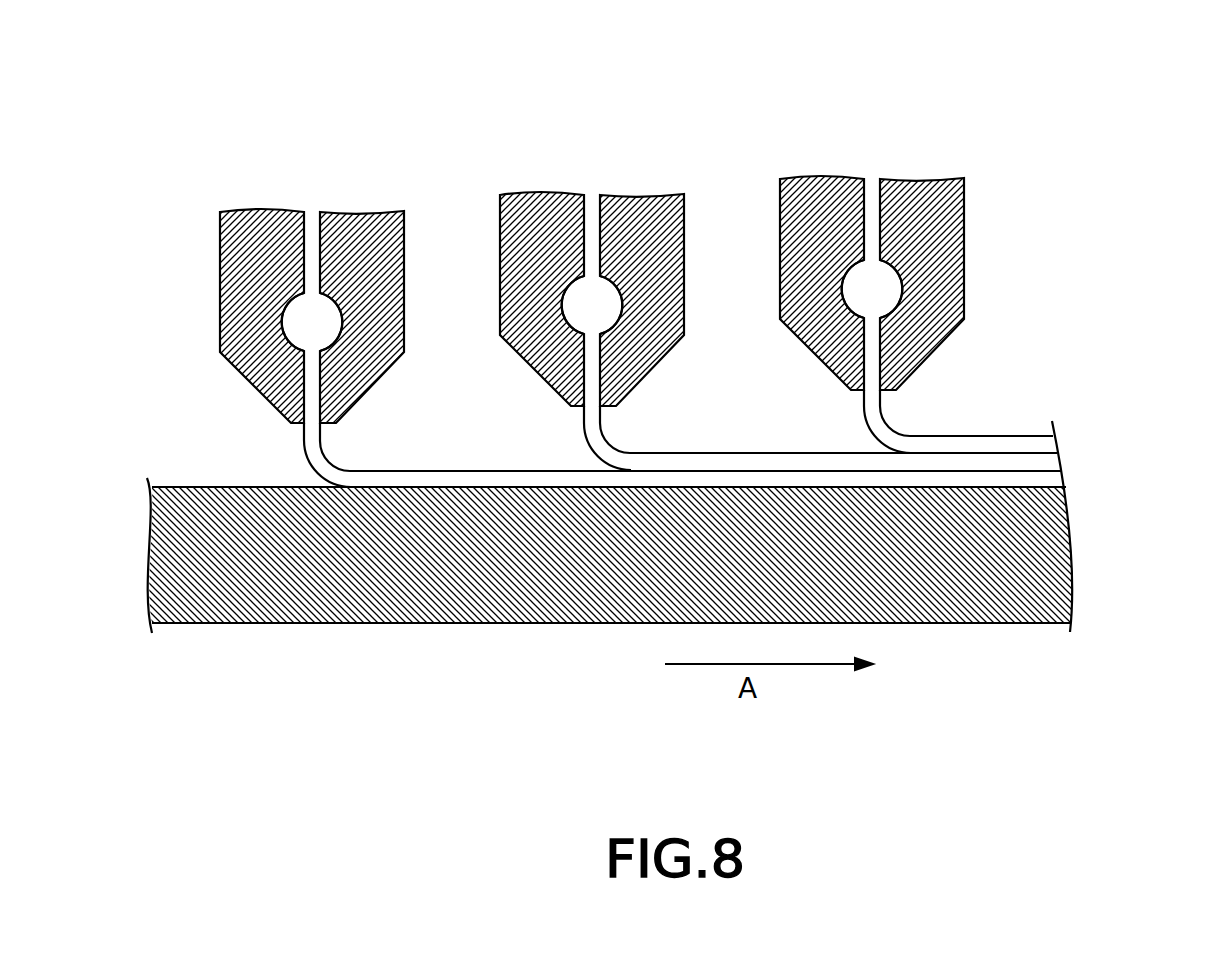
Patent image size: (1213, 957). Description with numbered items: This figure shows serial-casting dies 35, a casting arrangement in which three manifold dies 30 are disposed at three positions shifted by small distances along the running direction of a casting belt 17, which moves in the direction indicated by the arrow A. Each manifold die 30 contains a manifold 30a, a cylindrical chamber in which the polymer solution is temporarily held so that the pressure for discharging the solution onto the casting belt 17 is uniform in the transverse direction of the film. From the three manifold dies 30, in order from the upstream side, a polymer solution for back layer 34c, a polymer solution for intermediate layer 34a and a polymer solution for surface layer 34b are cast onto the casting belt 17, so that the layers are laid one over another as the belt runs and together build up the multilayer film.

The serial-casting dies 35 is at (360, 88).
The manifold die 30 is at (357, 232).
The manifold 30a is at (330, 318).
The polymer solution for intermediate layer 34a is at (333, 456).
The polymer solution for surface layer 34b is at (613, 438).
The polymer solution for back layer 34c is at (902, 428).
The casting belt 17 is at (1023, 558).